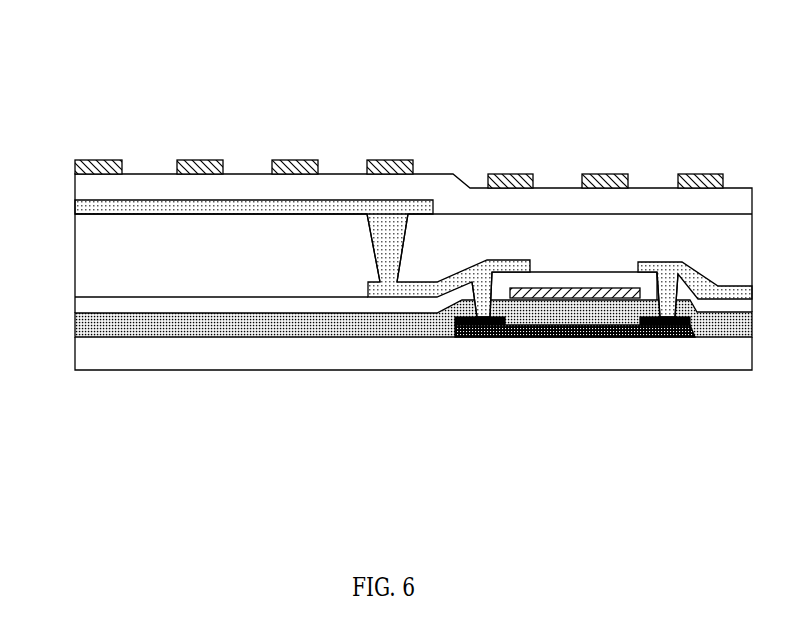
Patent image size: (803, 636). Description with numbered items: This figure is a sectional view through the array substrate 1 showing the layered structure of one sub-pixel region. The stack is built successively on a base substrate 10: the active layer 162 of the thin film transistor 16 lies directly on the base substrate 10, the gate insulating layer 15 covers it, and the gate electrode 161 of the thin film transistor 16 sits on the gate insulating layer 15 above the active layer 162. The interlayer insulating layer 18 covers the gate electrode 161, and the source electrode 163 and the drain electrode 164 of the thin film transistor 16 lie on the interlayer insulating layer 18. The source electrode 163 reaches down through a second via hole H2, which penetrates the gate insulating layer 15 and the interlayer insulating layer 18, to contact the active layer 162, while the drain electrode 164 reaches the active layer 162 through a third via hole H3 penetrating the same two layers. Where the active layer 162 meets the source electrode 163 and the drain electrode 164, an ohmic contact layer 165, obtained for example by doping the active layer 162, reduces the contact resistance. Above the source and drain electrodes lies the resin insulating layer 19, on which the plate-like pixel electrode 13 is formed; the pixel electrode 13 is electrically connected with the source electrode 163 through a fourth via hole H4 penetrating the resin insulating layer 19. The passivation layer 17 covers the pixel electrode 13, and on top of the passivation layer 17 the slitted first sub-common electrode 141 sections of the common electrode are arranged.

The array substrate 1 is at (25, 66).
The base substrate 10 is at (152, 348).
The pixel electrode 13 is at (423, 208).
The first sub-common electrode 141 is at (93, 160).
The gate insulating layer 15 is at (221, 320).
The thin film transistor 16 is at (603, 368).
The gate electrode 161 is at (570, 291).
The active layer 162 is at (627, 333).
The source electrode 163 is at (527, 272).
The drain electrode 164 is at (695, 349).
The ohmic contact layer 165 is at (666, 322).
The passivation layer 17 is at (625, 200).
The interlayer insulating layer 18 is at (294, 302).
The resin insulating layer 19 is at (557, 248).
The second via hole H2 is at (475, 316).
The third via hole H3 is at (663, 316).
The fourth via hole H4 is at (375, 252).